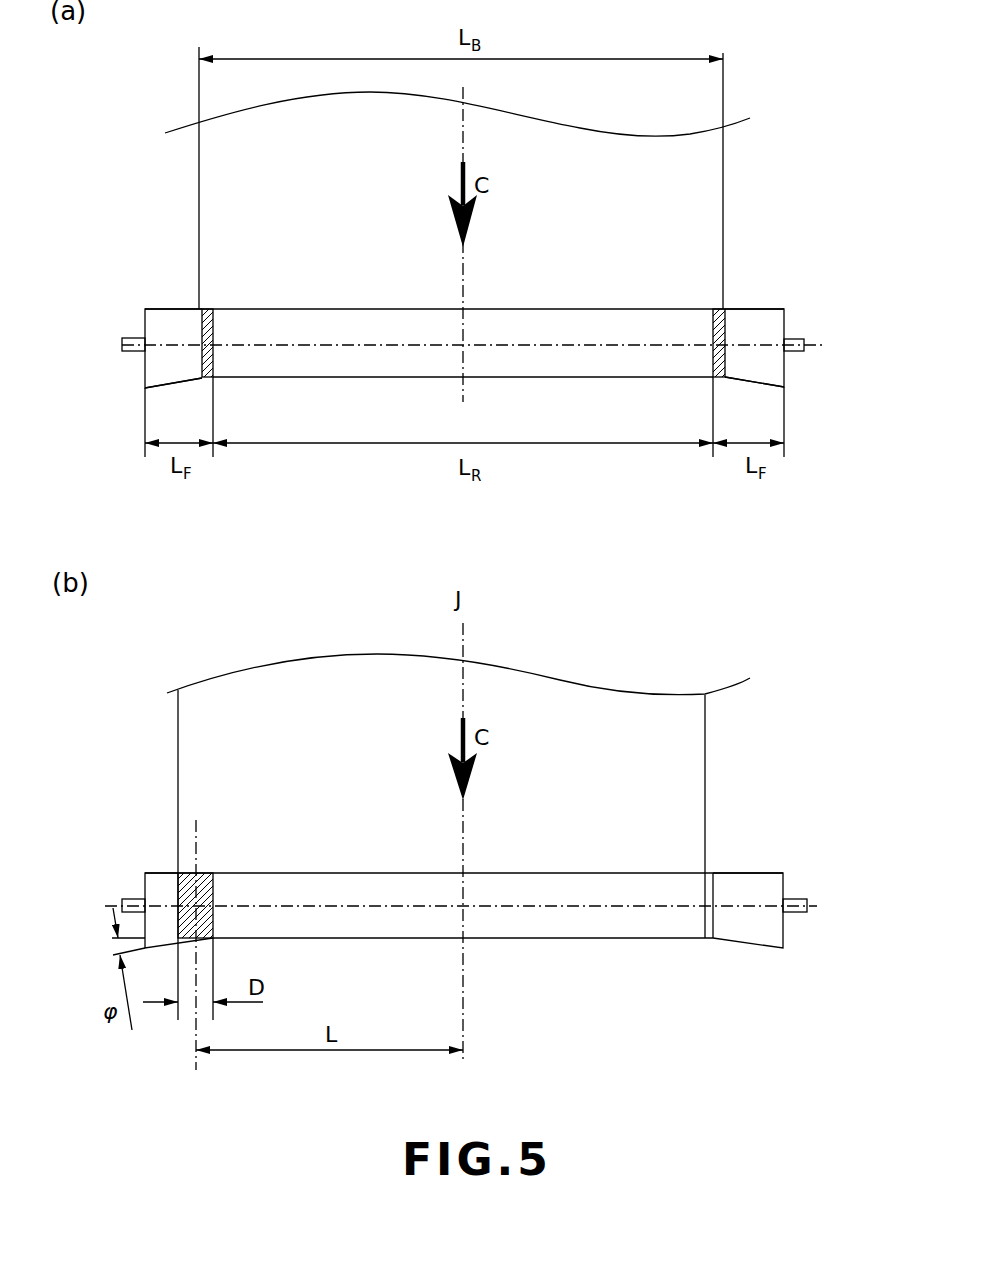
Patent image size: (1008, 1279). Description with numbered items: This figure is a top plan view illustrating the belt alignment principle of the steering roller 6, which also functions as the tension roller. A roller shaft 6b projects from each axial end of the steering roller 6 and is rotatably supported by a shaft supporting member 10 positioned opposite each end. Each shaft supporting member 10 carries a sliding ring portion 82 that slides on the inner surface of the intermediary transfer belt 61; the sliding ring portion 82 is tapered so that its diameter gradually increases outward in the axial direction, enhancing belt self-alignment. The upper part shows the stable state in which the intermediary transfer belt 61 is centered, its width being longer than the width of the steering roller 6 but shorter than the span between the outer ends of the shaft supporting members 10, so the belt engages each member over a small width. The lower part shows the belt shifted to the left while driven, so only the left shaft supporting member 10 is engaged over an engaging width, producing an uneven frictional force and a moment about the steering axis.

The steering roller 6 is at (591, 358).
The roller shaft 6b is at (804, 352).
The shaft supporting member 10 is at (167, 322).
The intermediary transfer belt 61 is at (702, 182).
The sliding ring portion 82 is at (172, 383).